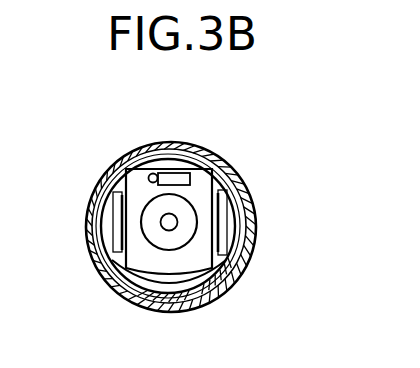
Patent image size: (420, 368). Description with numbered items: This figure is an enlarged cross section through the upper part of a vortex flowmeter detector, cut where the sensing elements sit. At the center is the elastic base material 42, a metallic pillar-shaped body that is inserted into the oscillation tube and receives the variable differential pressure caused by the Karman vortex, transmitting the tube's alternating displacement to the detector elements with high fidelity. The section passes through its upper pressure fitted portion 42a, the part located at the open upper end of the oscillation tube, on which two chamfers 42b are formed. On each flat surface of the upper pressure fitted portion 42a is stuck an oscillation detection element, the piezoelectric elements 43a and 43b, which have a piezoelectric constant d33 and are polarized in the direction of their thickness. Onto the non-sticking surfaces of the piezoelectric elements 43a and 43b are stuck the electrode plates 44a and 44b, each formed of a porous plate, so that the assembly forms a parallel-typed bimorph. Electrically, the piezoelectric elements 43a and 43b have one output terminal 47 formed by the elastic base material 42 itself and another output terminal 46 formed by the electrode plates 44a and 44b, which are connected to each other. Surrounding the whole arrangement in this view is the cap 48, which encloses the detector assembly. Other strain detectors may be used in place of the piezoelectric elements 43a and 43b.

The elastic base material 42 is at (124, 296).
The upper pressure fitted portion 42a is at (203, 301).
The chamfers 42b is at (236, 278).
The piezoelectric element 43a is at (226, 237).
The piezoelectric element 43b is at (107, 253).
The electrode plate 44a is at (229, 204).
The electrode plate 44b is at (112, 213).
The output terminal 46 is at (169, 225).
The output terminal 47 is at (153, 174).
The cap 48 is at (112, 169).